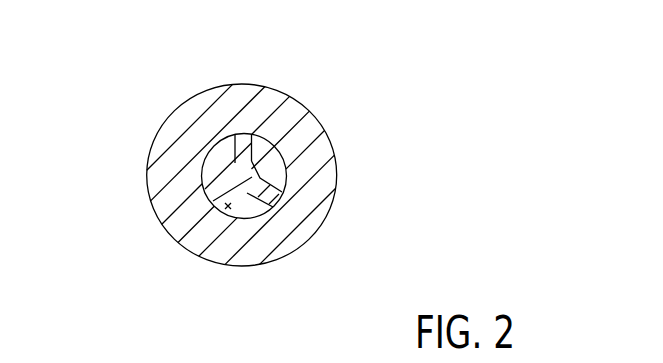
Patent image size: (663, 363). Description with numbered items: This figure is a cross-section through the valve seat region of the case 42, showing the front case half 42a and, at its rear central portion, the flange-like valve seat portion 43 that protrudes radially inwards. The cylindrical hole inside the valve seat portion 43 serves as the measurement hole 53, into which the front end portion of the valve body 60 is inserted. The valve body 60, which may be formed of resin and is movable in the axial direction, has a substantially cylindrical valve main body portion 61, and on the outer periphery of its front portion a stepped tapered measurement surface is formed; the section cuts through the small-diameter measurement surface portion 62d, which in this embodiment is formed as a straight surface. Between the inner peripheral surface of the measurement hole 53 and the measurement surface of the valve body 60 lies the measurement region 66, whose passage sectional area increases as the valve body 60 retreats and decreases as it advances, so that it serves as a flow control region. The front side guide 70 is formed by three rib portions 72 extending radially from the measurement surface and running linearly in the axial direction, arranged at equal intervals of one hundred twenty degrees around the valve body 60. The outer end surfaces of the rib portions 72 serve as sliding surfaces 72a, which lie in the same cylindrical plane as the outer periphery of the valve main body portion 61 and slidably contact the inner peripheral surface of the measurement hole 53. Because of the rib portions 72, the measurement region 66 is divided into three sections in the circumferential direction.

The case 42 is at (309, 102).
The front case half 42a is at (312, 130).
The valve seat portion 43 is at (293, 182).
The measurement hole 53 is at (213, 151).
The valve body 60 is at (246, 203).
The valve main body portion 61 is at (233, 170).
The measurement surface portion 62d is at (262, 160).
The measurement region 66 is at (228, 210).
The front side guide 70 is at (229, 147).
The rib portions 72 is at (243, 134).
The sliding surfaces 72a is at (208, 193).